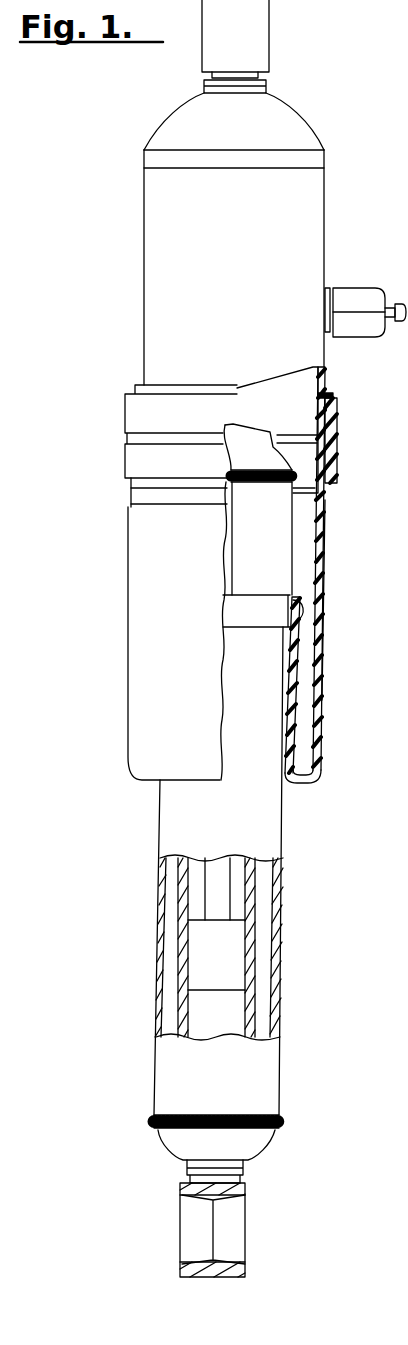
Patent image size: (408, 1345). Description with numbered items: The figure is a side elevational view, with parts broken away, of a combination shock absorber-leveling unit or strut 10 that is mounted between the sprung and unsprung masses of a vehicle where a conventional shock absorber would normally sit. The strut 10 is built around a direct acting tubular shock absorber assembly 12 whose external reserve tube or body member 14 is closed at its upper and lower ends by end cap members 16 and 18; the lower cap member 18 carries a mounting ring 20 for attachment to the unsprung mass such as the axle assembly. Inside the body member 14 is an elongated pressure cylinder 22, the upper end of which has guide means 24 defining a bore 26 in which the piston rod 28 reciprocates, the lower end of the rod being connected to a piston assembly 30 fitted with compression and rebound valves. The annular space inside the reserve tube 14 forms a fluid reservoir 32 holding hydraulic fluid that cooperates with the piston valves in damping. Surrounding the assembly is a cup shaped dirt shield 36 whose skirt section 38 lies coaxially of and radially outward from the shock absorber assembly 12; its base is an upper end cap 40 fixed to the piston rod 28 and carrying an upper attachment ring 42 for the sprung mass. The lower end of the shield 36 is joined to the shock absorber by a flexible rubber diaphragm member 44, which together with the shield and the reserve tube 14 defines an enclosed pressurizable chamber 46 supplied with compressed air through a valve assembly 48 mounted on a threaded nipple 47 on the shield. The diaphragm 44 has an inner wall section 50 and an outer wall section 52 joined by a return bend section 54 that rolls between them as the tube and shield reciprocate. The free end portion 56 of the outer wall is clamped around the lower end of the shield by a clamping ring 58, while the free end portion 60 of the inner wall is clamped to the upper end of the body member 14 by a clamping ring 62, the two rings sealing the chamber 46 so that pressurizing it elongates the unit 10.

The combination shock absorber-leveling unit 10 is at (123, 815).
The tubular shock absorber assembly 12 is at (297, 852).
The reserve tube 14 is at (283, 970).
The upper end cap member 16 is at (260, 427).
The lower end cap member 18 is at (170, 1143).
The mounting ring 20 is at (180, 1203).
The pressure cylinder 22 is at (250, 1020).
The guide means 24 is at (259, 409).
The bore 26 is at (228, 412).
The piston rod 28 is at (223, 407).
The piston assembly 30 is at (193, 973).
The fluid reservoir 32 is at (172, 952).
The dirt shield 36 is at (227, 465).
The skirt section 38 is at (140, 280).
The upper end cap 40 is at (293, 125).
The upper attachment ring 42 is at (257, 48).
The diaphragm member 44 is at (338, 586).
The pressurizable chamber 46 is at (303, 523).
The threaded nipple 47 is at (326, 303).
The valve assembly 48 is at (352, 297).
The inner wall section 50 is at (290, 698).
The outer wall section 52 is at (322, 577).
The return bend section 54 is at (300, 782).
The free end portion of outer wall section 56 is at (328, 395).
The clamping ring 58 is at (338, 463).
The free end portion of inner wall section 60 is at (293, 580).
The clamping ring 62 is at (300, 620).